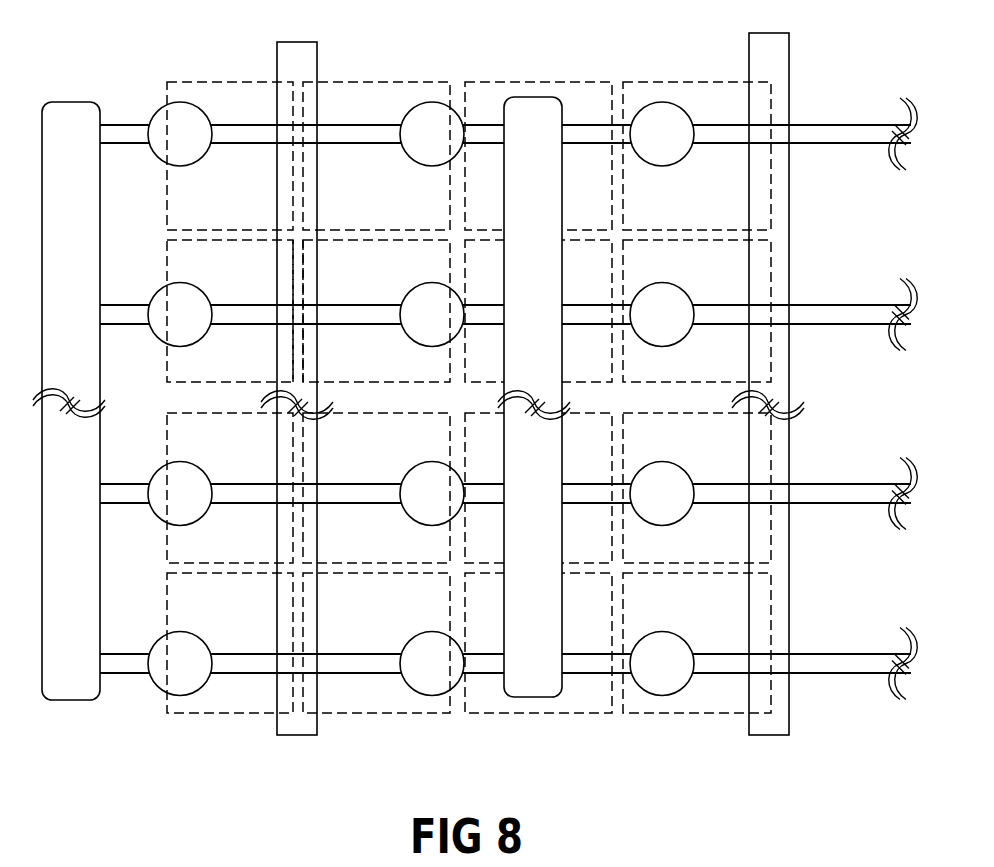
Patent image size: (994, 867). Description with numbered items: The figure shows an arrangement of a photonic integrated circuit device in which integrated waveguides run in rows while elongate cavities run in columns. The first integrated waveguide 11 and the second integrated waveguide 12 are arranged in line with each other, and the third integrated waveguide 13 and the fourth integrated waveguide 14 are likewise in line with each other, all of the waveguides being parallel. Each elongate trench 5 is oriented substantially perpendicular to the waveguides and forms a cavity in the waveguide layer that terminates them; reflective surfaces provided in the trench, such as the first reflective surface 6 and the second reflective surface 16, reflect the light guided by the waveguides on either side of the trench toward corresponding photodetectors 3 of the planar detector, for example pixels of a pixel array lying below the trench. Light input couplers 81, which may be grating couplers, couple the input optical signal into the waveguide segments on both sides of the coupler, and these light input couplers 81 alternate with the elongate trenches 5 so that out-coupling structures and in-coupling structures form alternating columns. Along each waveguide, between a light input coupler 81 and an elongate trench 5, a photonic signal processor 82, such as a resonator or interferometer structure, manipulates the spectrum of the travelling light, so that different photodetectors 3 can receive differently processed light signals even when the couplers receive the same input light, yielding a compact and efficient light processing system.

The photodetector 3 is at (375, 712).
The elongate trench 5 is at (318, 55).
The first reflective surface 6 is at (277, 293).
The first integrated waveguide 11 is at (121, 305).
The second integrated waveguide 12 is at (336, 328).
The third integrated waveguide 13 is at (133, 125).
The fourth integrated waveguide 14 is at (367, 123).
The second reflective surface 16 is at (322, 283).
The light input coupler 81 is at (70, 703).
The photonic signal processor 82 is at (183, 524).